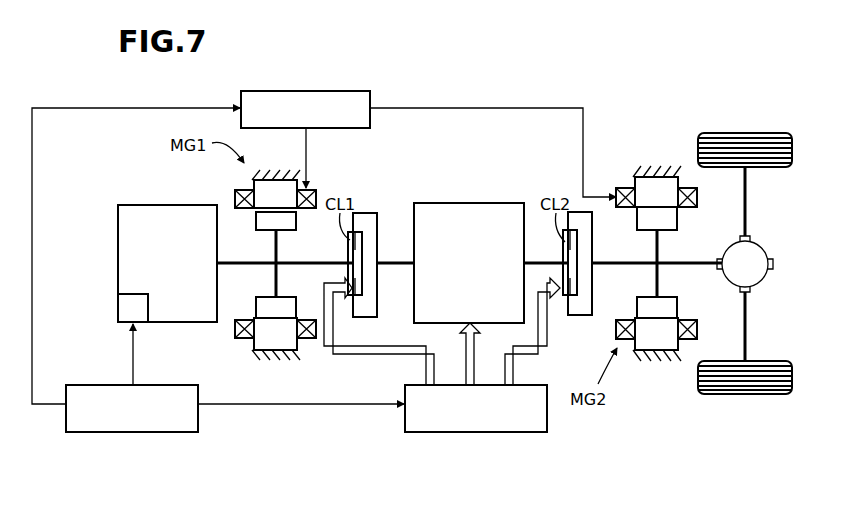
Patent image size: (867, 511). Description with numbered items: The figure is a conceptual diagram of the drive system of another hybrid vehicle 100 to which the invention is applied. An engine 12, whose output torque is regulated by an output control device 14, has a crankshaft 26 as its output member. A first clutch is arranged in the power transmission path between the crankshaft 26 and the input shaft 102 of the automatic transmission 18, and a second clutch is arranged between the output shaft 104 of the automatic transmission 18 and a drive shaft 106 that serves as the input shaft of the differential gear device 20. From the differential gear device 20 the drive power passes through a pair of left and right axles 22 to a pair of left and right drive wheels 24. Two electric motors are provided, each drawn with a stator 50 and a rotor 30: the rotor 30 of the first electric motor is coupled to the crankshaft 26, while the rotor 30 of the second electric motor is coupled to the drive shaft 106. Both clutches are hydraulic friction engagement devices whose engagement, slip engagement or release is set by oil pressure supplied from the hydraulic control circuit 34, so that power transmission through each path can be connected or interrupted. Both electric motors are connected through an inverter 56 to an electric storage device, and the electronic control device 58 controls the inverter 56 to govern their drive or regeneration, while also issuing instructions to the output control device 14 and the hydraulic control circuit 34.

The hybrid vehicle 100 is at (702, 66).
The engine 12 is at (138, 207).
The output control device 14 is at (120, 309).
The automatic transmission 18 is at (500, 207).
The differential gear device 20 is at (769, 263).
The axles 22 is at (747, 198).
The drive wheels 24 is at (793, 148).
The crankshaft 26 is at (237, 261).
The rotor 30 is at (288, 230).
The hydraulic control circuit 34 is at (505, 432).
The stator 50 is at (254, 184).
The inverter 56 is at (357, 130).
The electronic control device 58 is at (168, 432).
The input shaft 102 is at (398, 261).
The output shaft 104 is at (545, 261).
The drive shaft 106 is at (615, 261).